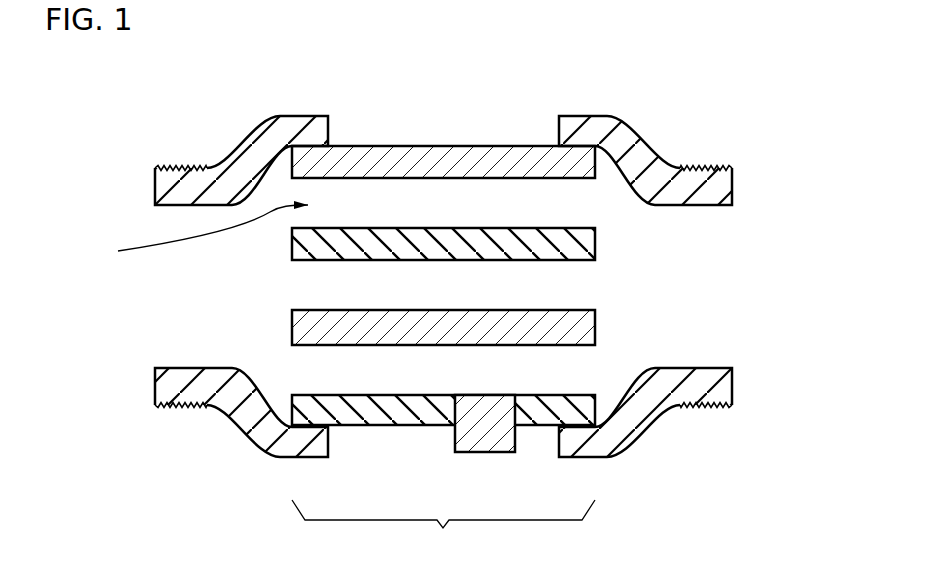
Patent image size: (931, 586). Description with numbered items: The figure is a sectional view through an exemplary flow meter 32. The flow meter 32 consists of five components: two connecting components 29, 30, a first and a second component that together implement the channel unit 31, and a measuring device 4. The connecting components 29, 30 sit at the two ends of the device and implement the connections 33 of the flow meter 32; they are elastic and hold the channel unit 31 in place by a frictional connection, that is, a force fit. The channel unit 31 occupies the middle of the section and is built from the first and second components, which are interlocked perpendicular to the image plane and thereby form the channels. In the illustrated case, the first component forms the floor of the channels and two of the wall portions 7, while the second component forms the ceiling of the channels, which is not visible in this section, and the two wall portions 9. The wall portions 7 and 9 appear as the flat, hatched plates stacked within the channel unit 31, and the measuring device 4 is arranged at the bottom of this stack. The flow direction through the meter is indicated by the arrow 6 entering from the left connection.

The measuring device 4 is at (478, 430).
The exhaust gas flow direction 6 is at (204, 233).
The wall portions 7 is at (477, 245).
The wall portions 9 is at (422, 158).
The connecting component 29 is at (247, 412).
The connecting component 30 is at (625, 413).
The channel unit 31 is at (443, 529).
The flow meter 32 is at (683, 137).
The connections 33 is at (193, 185).